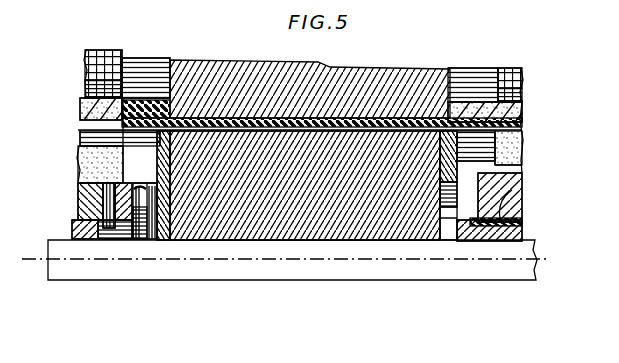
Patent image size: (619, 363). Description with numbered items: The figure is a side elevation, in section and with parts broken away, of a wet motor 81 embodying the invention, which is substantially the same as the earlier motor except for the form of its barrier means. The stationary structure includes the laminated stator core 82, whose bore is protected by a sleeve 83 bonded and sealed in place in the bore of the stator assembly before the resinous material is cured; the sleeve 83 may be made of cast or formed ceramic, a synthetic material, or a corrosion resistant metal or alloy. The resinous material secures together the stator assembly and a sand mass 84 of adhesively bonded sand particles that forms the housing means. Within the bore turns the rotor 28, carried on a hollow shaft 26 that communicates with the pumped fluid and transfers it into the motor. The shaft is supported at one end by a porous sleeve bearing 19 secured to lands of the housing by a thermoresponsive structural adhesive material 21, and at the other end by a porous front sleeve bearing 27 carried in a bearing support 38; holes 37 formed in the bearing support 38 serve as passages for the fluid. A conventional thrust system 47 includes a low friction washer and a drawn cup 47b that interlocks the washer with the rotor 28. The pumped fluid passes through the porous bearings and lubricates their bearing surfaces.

The motor 81 is at (131, 61).
The stator core 82 is at (315, 87).
The sleeve 83 is at (525, 120).
The sand mass 84 is at (80, 103).
The holes 37 is at (111, 182).
The drawn cup 47b is at (152, 186).
The thrust system 47 is at (141, 183).
The bearing support 38 is at (80, 197).
The front sleeve bearing 27 is at (72, 233).
The adhesive material 21 is at (523, 198).
The sleeve bearing 19 is at (482, 233).
The rotor 28 is at (411, 200).
The hollow shaft 26 is at (300, 272).